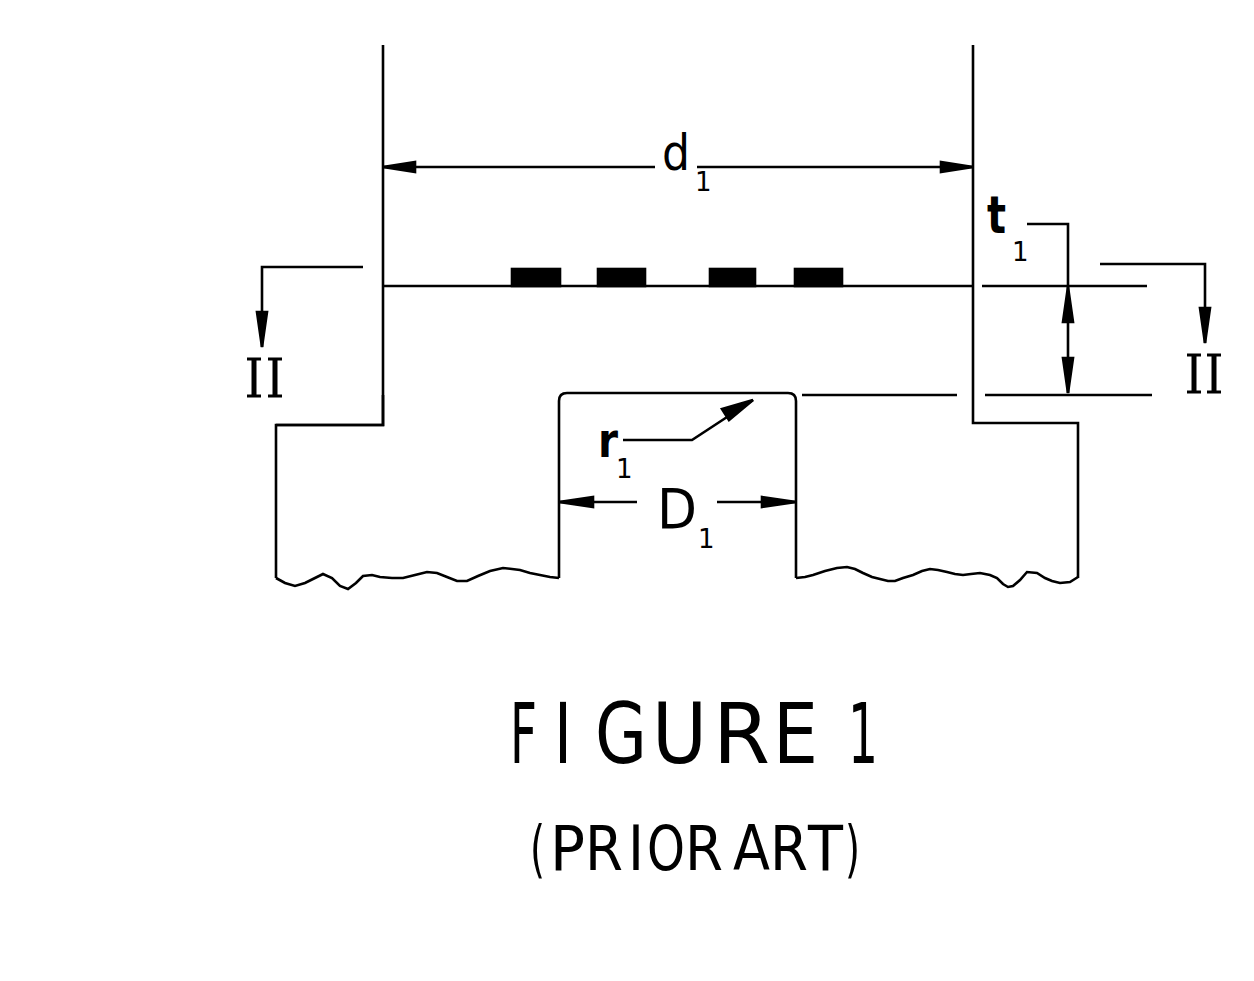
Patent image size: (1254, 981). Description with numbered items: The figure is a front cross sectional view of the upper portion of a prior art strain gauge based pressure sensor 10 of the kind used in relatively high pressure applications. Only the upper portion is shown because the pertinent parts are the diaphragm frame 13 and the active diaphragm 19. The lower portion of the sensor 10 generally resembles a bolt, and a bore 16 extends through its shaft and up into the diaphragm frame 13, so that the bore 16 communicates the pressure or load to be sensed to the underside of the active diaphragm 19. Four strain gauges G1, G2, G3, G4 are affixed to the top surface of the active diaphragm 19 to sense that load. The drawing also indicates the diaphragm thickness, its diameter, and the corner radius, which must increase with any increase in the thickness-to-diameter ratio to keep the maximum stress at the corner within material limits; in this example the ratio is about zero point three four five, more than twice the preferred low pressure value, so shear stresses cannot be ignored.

The strain gauge based pressure sensor 10 is at (323, 183).
The diaphragm frame 13 is at (413, 412).
The bore 16 is at (560, 542).
The active diaphragm 19 is at (668, 372).
The strain gauge G1 is at (542, 245).
The strain gauge G2 is at (620, 245).
The strain gauge G3 is at (732, 245).
The strain gauge G4 is at (823, 245).